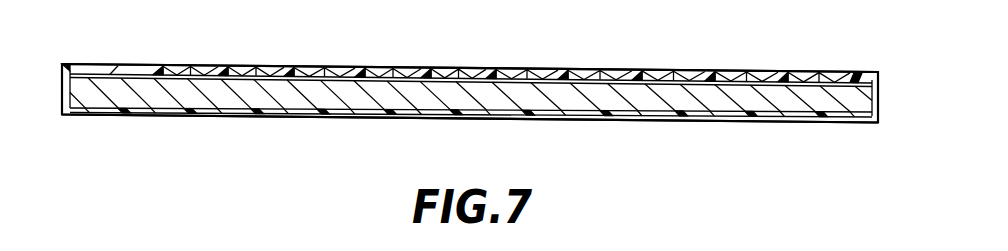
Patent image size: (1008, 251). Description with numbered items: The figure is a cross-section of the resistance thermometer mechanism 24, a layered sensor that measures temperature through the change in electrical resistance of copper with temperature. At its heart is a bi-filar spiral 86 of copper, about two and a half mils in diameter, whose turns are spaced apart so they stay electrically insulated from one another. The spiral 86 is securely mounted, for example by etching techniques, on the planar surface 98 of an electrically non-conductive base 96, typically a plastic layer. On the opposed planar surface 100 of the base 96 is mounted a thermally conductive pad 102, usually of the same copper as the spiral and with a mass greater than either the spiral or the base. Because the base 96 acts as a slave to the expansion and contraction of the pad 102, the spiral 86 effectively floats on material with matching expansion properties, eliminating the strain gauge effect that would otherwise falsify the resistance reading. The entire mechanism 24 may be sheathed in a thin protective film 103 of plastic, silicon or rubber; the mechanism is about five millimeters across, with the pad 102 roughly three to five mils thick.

The resistance thermometer mechanism 24 is at (263, 117).
The bi-filar spiral 86 is at (333, 65).
The electrically non-conductive base 96 is at (147, 76).
The planar surface 98 is at (110, 63).
The planar surface 100 is at (118, 108).
The thermally conductive pad 102 is at (457, 100).
The protective film 103 is at (645, 121).